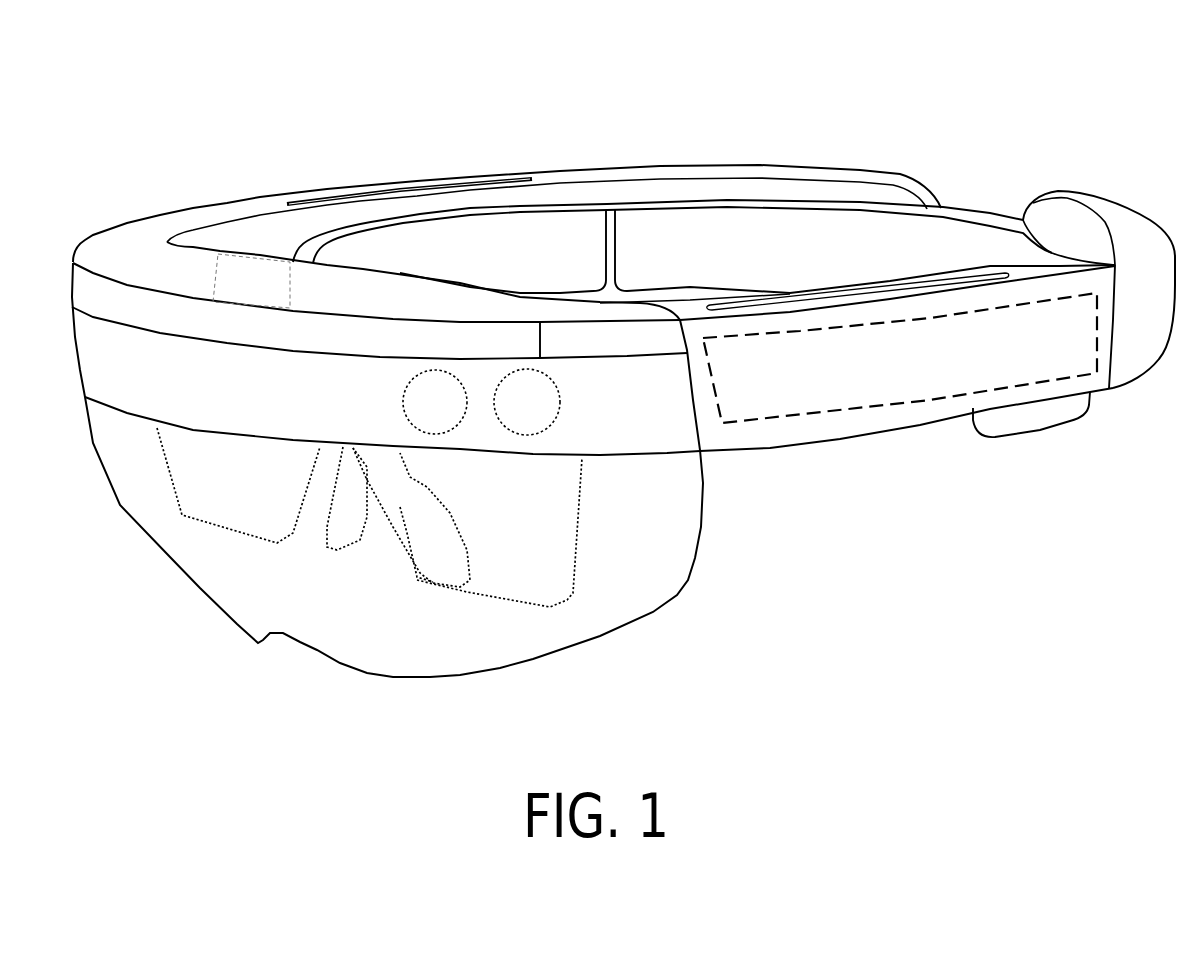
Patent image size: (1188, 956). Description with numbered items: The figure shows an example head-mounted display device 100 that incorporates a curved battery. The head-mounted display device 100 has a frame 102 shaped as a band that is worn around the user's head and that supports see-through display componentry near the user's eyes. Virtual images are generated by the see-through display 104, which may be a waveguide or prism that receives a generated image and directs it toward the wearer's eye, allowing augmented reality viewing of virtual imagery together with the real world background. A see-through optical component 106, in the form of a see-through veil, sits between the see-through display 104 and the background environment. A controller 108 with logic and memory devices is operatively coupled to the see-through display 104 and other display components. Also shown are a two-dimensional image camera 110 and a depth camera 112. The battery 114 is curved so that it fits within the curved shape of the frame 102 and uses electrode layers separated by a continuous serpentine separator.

The head-mounted display device 100 is at (623, 370).
The frame 102 is at (833, 438).
The see-through display 104 is at (580, 502).
The see-through optical component 106 is at (688, 579).
The controller 108 is at (236, 291).
The two-dimensional image camera 110 is at (418, 415).
The depth camera 112 is at (510, 415).
The battery 114 is at (908, 365).